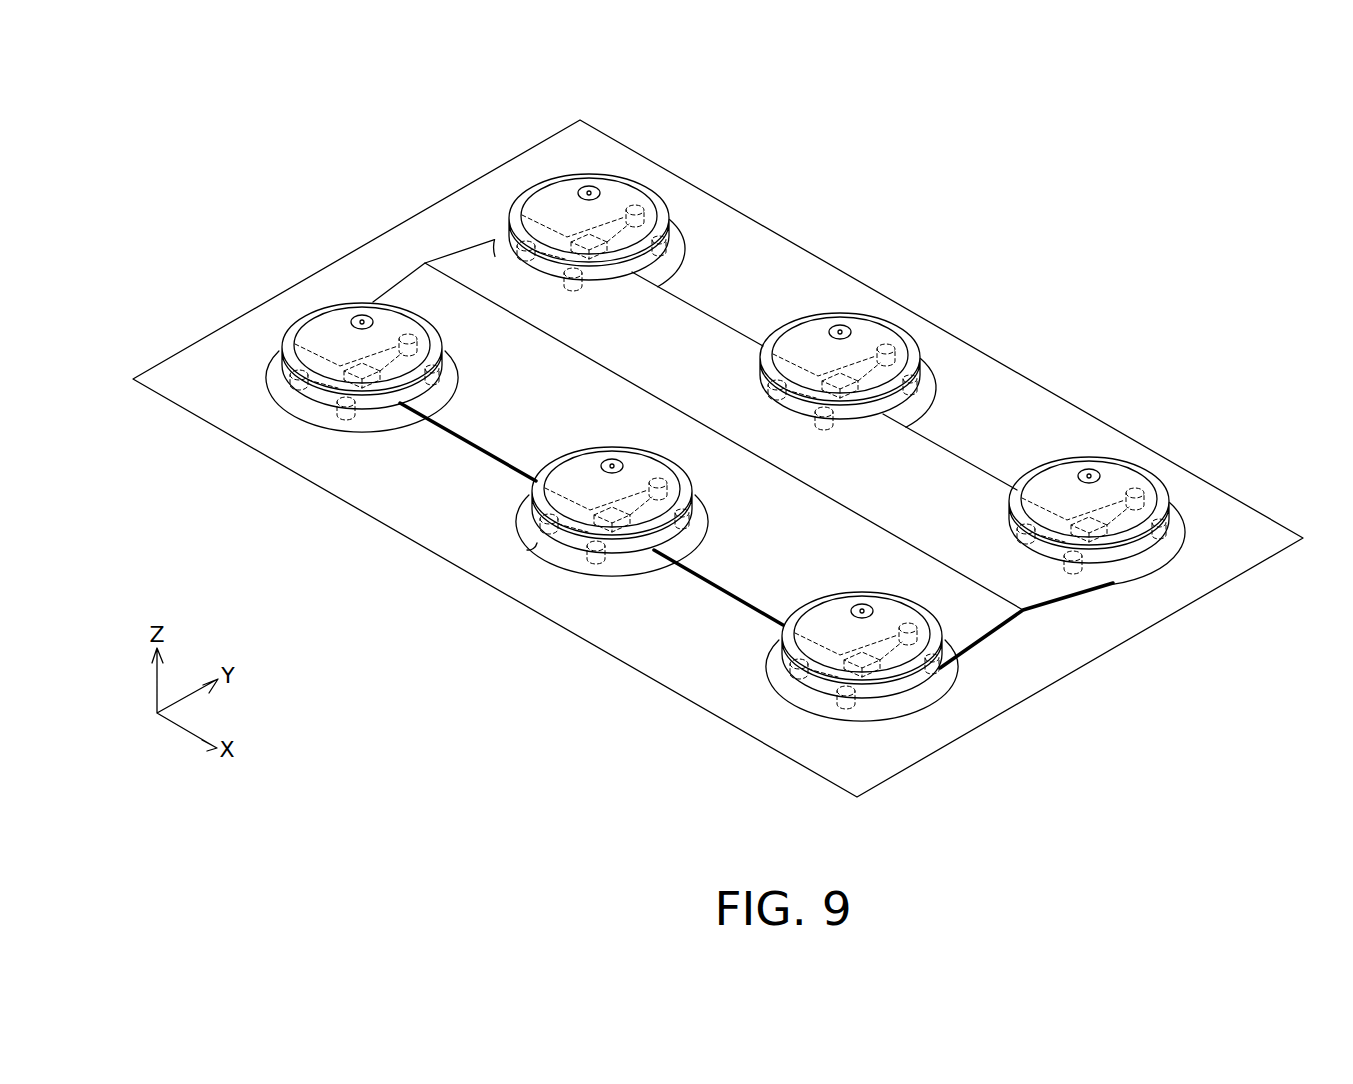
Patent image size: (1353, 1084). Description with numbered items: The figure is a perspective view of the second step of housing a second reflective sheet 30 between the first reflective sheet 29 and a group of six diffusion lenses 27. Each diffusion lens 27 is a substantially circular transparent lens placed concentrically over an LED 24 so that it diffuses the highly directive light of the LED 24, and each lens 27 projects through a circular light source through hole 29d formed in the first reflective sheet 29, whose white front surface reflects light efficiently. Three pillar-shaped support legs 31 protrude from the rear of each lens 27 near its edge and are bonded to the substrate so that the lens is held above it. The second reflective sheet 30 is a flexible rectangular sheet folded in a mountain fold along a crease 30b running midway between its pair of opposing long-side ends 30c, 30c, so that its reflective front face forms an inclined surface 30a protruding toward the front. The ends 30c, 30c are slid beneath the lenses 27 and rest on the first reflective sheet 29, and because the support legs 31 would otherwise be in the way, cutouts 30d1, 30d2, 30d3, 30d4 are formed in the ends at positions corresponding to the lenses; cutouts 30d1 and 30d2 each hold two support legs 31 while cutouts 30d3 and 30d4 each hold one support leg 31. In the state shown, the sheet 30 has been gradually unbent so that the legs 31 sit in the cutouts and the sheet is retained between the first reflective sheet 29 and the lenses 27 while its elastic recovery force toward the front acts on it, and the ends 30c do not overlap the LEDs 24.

The LED 24 is at (588, 240).
The diffusion lens 27 is at (627, 193).
The first reflective sheet 29 is at (1013, 670).
The light source through hole 29d is at (537, 543).
The second reflective sheet 30 is at (726, 445).
The inclined surface 30a is at (928, 480).
The crease 30b is at (637, 383).
The end 30c is at (980, 473).
The cutout 30d1 is at (580, 263).
The cutout 30d2 is at (905, 362).
The cutout 30d3 is at (283, 387).
The cutout 30d4 is at (607, 553).
The support leg 31 is at (822, 410).